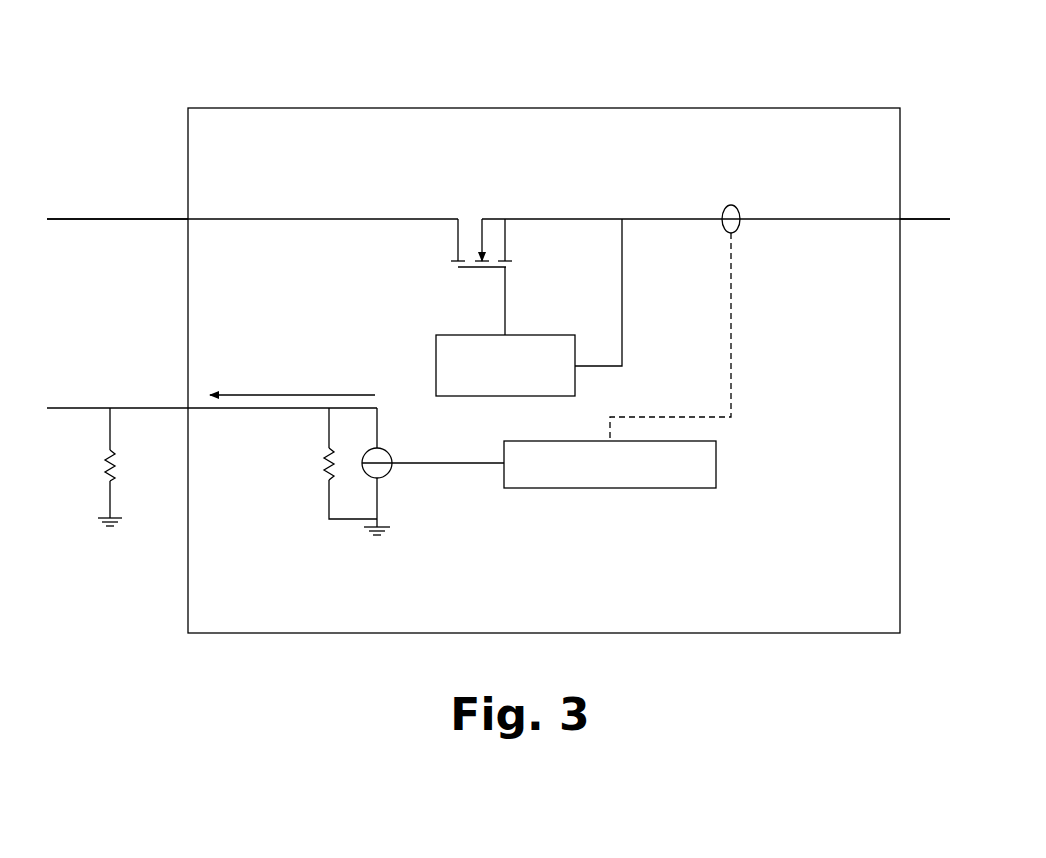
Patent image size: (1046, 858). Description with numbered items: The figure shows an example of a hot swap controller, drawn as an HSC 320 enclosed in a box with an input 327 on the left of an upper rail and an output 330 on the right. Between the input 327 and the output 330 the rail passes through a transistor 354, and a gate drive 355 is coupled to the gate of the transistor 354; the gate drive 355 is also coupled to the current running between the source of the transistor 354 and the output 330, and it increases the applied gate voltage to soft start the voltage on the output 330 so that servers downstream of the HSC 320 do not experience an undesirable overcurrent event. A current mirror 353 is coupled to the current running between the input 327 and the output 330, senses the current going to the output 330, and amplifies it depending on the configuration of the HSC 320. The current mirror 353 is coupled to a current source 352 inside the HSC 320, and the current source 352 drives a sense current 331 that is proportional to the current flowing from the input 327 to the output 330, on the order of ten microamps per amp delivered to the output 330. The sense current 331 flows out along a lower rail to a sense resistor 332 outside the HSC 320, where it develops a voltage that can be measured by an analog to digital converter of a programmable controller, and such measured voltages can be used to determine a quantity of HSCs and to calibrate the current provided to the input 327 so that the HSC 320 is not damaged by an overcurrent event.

The hot swap controller (HSC) 320 is at (590, 62).
The input 327 is at (240, 218).
The output 330 is at (825, 218).
The sense current 331 is at (253, 395).
The sense resistor 332 is at (118, 470).
The current source 352 is at (390, 472).
The current mirror 353 is at (718, 463).
The transistor 354 is at (478, 276).
The gate drive 355 is at (490, 392).